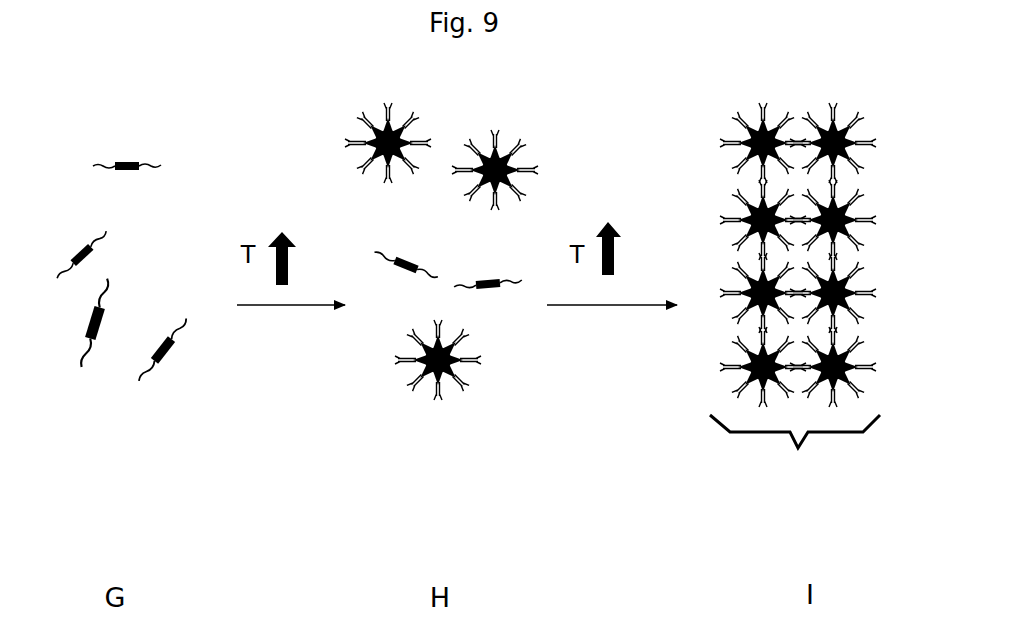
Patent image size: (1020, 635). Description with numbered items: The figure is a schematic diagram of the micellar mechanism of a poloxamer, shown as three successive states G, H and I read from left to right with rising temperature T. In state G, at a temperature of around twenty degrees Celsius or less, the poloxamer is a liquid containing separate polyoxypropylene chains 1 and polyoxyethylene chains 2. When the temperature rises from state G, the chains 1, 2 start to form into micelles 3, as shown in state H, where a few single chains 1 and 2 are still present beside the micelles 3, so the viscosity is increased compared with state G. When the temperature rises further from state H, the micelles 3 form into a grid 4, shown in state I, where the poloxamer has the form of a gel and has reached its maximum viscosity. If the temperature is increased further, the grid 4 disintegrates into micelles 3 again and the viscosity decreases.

The polyoxypropylene chains 1 is at (125, 152).
The polyoxyethylene chains 2 is at (105, 358).
The micelles 3 is at (360, 140).
The grid 4 is at (795, 462).